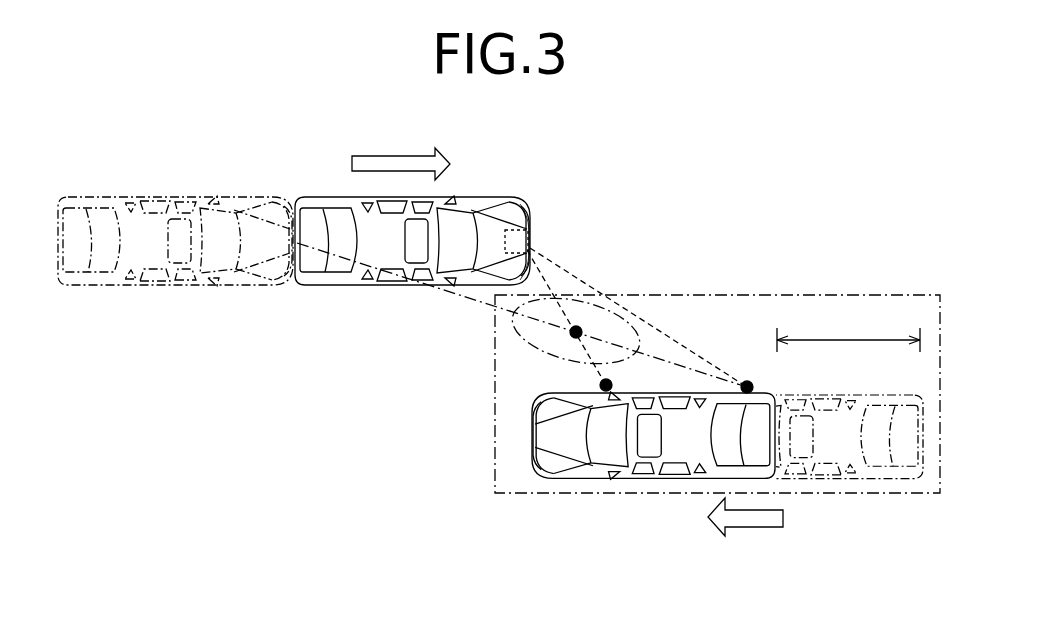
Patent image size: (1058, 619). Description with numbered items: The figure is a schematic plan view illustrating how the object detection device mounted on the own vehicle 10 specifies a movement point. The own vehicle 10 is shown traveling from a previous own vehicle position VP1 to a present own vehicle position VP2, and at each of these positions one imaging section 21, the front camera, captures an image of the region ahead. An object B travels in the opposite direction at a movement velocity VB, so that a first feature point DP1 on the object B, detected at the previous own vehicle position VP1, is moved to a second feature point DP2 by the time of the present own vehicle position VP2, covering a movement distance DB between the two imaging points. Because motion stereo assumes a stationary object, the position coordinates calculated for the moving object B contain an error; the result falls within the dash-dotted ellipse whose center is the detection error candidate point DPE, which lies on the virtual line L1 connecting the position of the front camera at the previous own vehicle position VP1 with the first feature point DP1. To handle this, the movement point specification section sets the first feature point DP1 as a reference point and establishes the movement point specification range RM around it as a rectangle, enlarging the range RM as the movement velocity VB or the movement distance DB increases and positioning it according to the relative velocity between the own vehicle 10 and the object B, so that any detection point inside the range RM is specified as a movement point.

The vehicle 10 is at (459, 232).
The imaging section 21 is at (533, 240).
The previous own vehicle position VP1 is at (282, 193).
The present own vehicle position VP2 is at (522, 193).
The virtual line L1 is at (472, 300).
The movement point specification range RM is at (860, 293).
The detection error candidate point DPE is at (581, 328).
The first feature point DP1 is at (749, 380).
The second feature point DP2 is at (600, 381).
The object B is at (569, 480).
The movement distance DB is at (848, 330).
The movement velocity VB is at (745, 532).